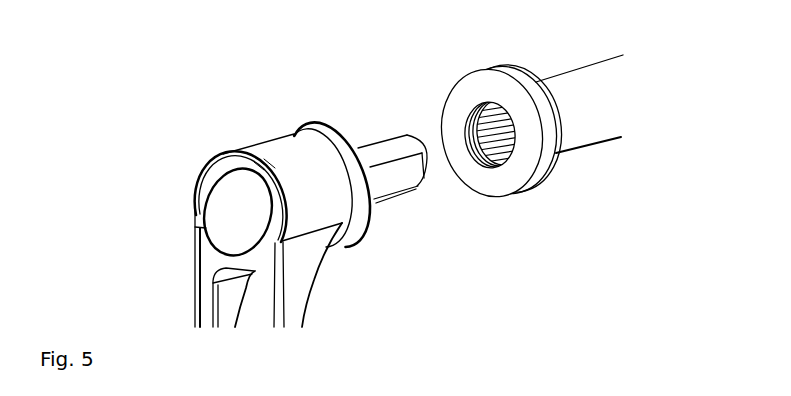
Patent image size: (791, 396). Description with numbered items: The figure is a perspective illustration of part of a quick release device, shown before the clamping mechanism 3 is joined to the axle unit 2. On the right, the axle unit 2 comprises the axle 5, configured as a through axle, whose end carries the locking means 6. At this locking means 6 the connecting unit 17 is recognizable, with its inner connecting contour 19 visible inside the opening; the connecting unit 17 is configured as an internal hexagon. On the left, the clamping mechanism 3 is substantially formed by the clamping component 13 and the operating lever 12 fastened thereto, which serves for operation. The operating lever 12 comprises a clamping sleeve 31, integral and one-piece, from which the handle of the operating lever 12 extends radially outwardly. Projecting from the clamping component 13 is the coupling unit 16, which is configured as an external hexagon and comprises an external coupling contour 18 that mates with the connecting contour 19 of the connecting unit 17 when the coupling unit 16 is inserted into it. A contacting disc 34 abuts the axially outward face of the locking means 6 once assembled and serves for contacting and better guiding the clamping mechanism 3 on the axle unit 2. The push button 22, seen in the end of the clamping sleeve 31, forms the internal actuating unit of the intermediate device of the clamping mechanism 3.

The axle unit 2 is at (580, 228).
The clamping mechanism 3 is at (176, 150).
The axle 5 is at (616, 122).
The locking means 6 is at (468, 93).
The operating lever 12 is at (196, 307).
The clamping component 13 is at (338, 112).
The coupling unit 16 is at (378, 137).
The connecting unit 17 is at (470, 156).
The external coupling contour 18 is at (405, 188).
The connecting contour 19 is at (474, 127).
The push button 22 is at (222, 208).
The clamping sleeve 31 is at (280, 152).
The contacting disc 34 is at (327, 127).